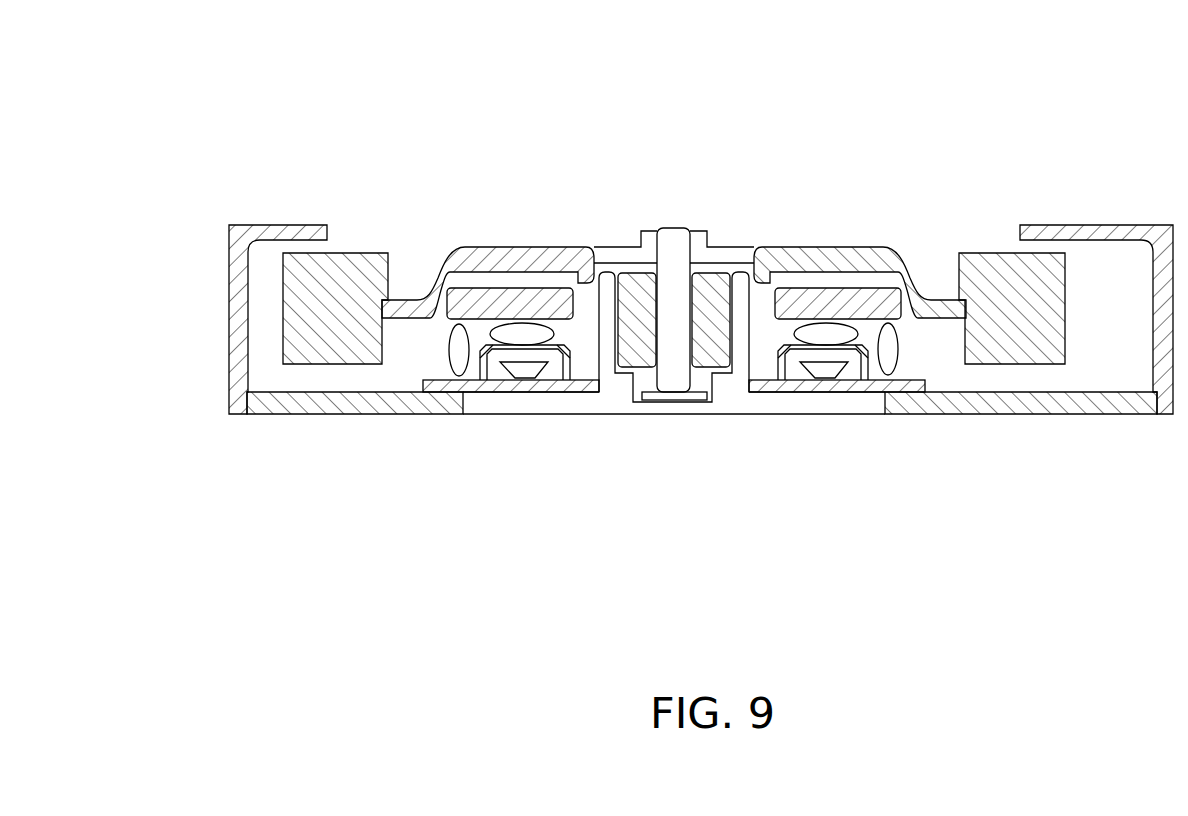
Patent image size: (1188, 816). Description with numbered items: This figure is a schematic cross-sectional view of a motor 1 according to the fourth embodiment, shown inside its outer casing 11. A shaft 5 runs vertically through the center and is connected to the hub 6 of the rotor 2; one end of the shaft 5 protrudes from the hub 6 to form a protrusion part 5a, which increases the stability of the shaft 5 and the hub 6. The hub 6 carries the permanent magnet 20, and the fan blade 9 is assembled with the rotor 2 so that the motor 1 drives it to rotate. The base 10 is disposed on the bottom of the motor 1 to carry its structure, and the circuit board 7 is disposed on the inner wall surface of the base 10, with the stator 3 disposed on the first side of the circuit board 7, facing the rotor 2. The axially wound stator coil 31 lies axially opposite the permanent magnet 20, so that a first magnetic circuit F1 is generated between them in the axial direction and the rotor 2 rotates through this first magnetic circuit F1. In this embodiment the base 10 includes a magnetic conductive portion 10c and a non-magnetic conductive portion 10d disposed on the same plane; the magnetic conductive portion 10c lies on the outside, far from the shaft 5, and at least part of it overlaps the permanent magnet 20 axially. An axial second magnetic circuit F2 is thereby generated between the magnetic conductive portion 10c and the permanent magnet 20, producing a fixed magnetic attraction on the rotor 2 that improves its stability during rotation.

The motor 1 is at (735, 98).
The rotor 2 is at (674, 224).
The stator 3 is at (662, 412).
The shaft 5 is at (693, 268).
The protrusion part 5a is at (673, 283).
The hub 6 is at (578, 280).
The circuit board 7 is at (587, 393).
The fan blade 9 is at (335, 293).
The base 10 is at (702, 400).
The magnetic conductive portion 10c is at (333, 408).
The non-magnetic conductive portion 10d is at (620, 405).
The housing 11 is at (229, 322).
The permanent magnet 20 is at (468, 300).
The stator coil 31 is at (512, 380).
The first magnetic circuit F1 is at (510, 323).
The second magnetic circuit F2 is at (453, 352).